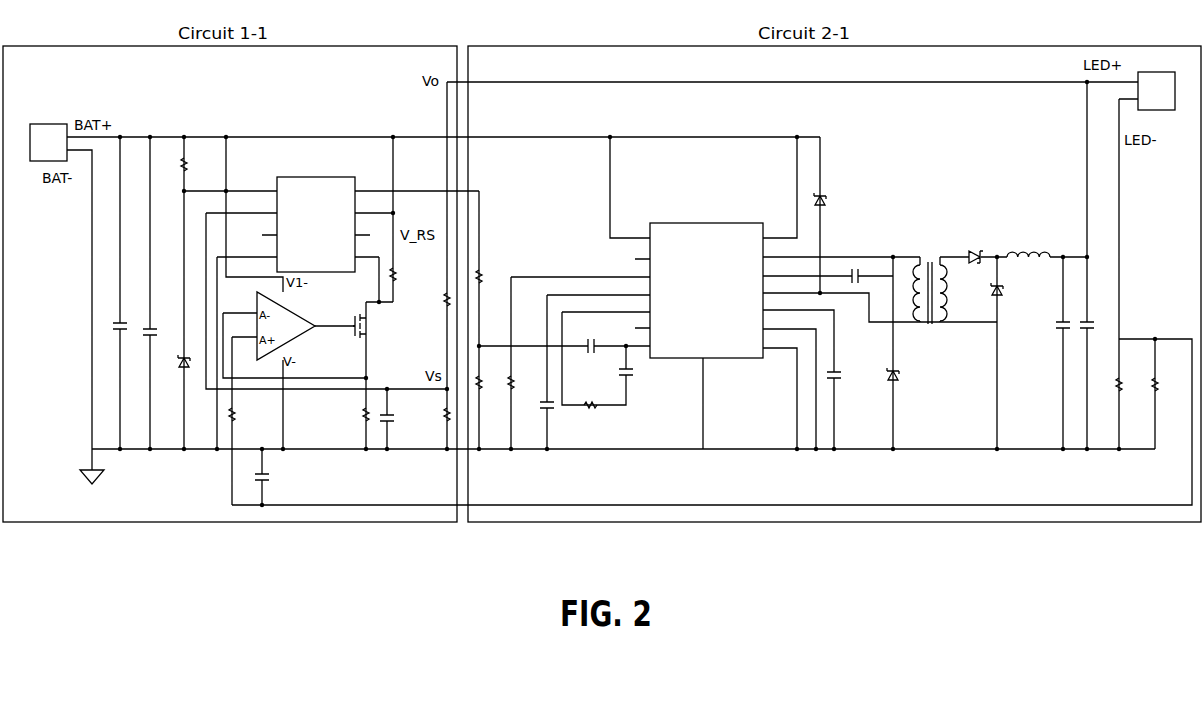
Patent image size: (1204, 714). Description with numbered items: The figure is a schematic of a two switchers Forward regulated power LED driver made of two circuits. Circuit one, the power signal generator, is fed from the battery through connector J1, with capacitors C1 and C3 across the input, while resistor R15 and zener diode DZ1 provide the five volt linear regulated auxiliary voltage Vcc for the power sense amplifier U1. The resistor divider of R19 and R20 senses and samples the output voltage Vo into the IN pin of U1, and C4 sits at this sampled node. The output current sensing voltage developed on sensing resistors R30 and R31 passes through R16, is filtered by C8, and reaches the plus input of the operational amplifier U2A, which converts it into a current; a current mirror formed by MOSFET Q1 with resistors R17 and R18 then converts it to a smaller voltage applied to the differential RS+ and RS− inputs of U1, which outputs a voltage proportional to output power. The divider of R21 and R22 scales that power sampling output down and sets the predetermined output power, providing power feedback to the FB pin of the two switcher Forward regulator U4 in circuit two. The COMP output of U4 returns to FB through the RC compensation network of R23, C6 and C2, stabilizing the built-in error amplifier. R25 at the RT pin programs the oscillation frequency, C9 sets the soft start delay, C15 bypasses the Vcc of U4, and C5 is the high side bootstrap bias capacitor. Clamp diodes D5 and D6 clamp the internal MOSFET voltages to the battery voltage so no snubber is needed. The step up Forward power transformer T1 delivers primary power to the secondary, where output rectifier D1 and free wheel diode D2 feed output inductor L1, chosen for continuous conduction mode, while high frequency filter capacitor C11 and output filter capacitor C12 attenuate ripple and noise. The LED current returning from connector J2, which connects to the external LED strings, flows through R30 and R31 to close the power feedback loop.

The battery connector J1 is at (48, 133).
The capacitor C1 is at (126, 313).
The capacitor C3 is at (158, 323).
The resistor R15 is at (199, 161).
The zener diode DZ1 is at (172, 373).
The power sense amplifier U1 is at (315, 215).
The operational amplifier U2A is at (286, 326).
The MOSFET Q1 is at (371, 326).
The resistor R17 is at (408, 274).
The resistor R19 is at (431, 302).
The resistor R16 is at (246, 416).
The resistor R18 is at (351, 416).
The capacitor C4 is at (395, 409).
The resistor R20 is at (431, 421).
The capacitor C8 is at (272, 478).
The resistor R21 is at (492, 270).
The resistor R22 is at (490, 377).
The resistor R25 is at (522, 377).
The capacitor C9 is at (539, 398).
The resistor R23 is at (592, 397).
The capacitor C2 is at (589, 337).
The capacitor C6 is at (637, 373).
The two switcher Forward regulator U4 is at (706, 281).
The clamp diode D5 is at (830, 200).
The high side bootstrap bias capacitor C5 is at (844, 272).
The bypass capacitor C15 is at (847, 376).
The clamp diode D6 is at (901, 366).
The step up Forward power transformer T1 is at (930, 280).
The output rectifier D1 is at (976, 249).
The output inductor L1 is at (1028, 246).
The free wheel diode D2 is at (1007, 293).
The high frequency filter capacitor C11 is at (1047, 326).
The output filter capacitor C12 is at (1097, 329).
The output LED current sensing resistor R30 is at (1131, 374).
The output LED current sensing resistor R31 is at (1168, 374).
The LED connector J2 is at (1156, 82).